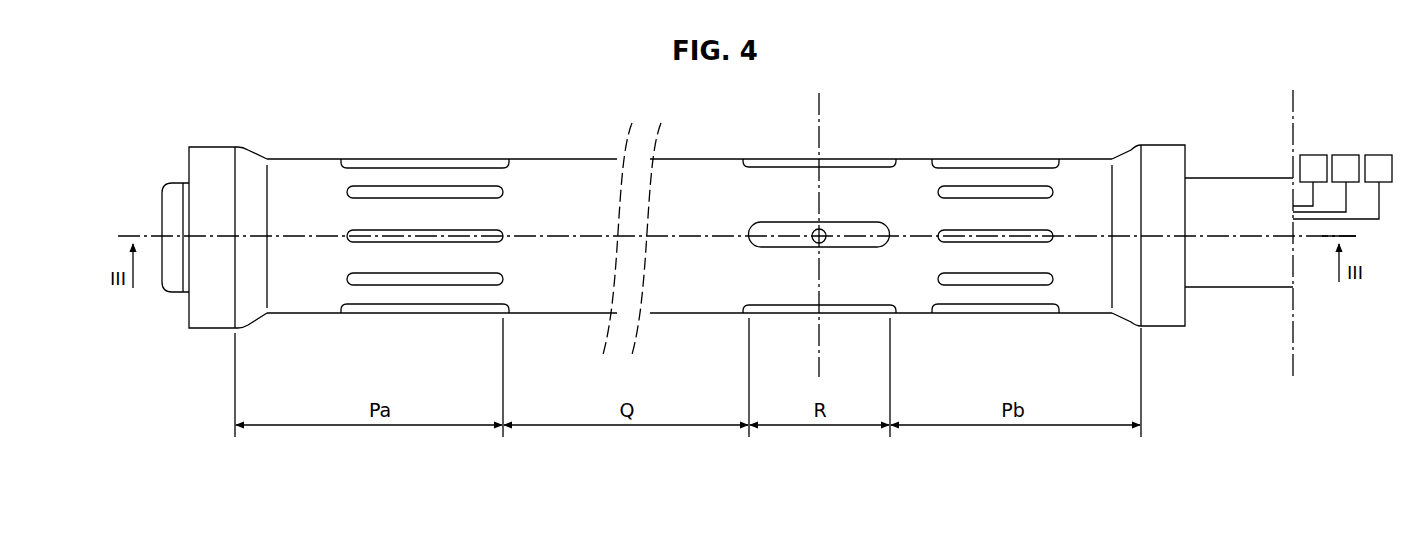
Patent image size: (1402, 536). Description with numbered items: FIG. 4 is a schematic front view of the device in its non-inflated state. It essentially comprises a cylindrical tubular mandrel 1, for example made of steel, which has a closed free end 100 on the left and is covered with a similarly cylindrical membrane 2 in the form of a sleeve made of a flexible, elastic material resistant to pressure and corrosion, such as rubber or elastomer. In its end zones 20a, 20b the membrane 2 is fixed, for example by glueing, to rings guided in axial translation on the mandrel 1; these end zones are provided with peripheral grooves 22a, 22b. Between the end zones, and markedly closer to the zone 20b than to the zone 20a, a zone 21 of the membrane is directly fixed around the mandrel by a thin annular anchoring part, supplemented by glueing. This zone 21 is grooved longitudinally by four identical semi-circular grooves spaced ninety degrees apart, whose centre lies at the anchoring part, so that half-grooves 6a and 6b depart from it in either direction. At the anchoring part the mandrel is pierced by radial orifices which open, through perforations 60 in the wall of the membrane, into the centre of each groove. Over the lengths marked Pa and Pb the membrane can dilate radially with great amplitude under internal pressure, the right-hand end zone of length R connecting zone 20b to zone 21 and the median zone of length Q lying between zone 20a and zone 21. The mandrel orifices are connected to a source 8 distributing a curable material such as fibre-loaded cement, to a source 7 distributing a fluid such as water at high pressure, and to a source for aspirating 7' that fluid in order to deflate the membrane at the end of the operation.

The cylindrical tubular mandrel 1 is at (1232, 190).
The membrane 2 is at (708, 298).
The end zone 20a is at (215, 157).
The end zone 20b is at (1162, 152).
The peripheral grooves 22a is at (430, 235).
The peripheral grooves 22b is at (1015, 236).
The half-groove 6a is at (792, 228).
The half-groove 6b is at (848, 228).
The perforation 60 is at (812, 243).
The zone of the membrane 21 is at (845, 275).
The closed free end 100 is at (175, 198).
The source for distributing fluid 7 is at (1310, 180).
The source for distributing curable material 8 is at (1326, 183).
The source for aspirating 7' is at (1342, 187).